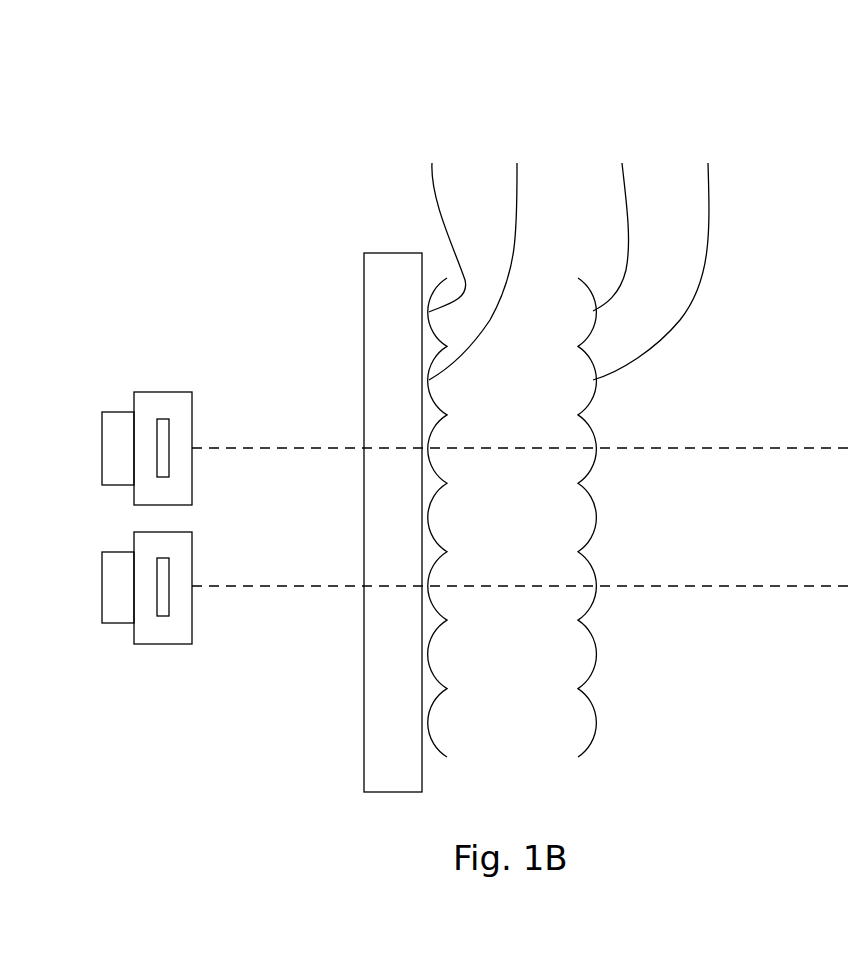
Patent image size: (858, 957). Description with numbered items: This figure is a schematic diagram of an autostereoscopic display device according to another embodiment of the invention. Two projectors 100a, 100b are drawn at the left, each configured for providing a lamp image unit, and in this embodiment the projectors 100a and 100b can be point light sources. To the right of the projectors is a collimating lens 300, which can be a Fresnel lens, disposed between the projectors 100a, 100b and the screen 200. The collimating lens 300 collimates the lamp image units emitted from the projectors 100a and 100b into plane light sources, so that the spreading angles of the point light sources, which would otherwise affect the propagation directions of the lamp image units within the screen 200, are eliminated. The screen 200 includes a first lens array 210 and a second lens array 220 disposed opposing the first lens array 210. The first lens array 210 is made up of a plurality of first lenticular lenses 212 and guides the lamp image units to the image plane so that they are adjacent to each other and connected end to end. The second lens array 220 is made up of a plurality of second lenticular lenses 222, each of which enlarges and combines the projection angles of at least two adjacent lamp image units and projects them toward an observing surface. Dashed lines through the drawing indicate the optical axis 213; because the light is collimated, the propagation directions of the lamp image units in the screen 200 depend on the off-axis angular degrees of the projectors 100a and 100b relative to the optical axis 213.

The projector 100a is at (118, 473).
The projector 100b is at (118, 562).
The screen 200 is at (693, 72).
The first lens array 210 is at (538, 128).
The first lenticular lenses 212 is at (472, 255).
The optical axis 213 is at (636, 446).
The second lens array 220 is at (730, 128).
The second lenticular lenses 222 is at (659, 255).
The collimating lens 300 is at (385, 268).